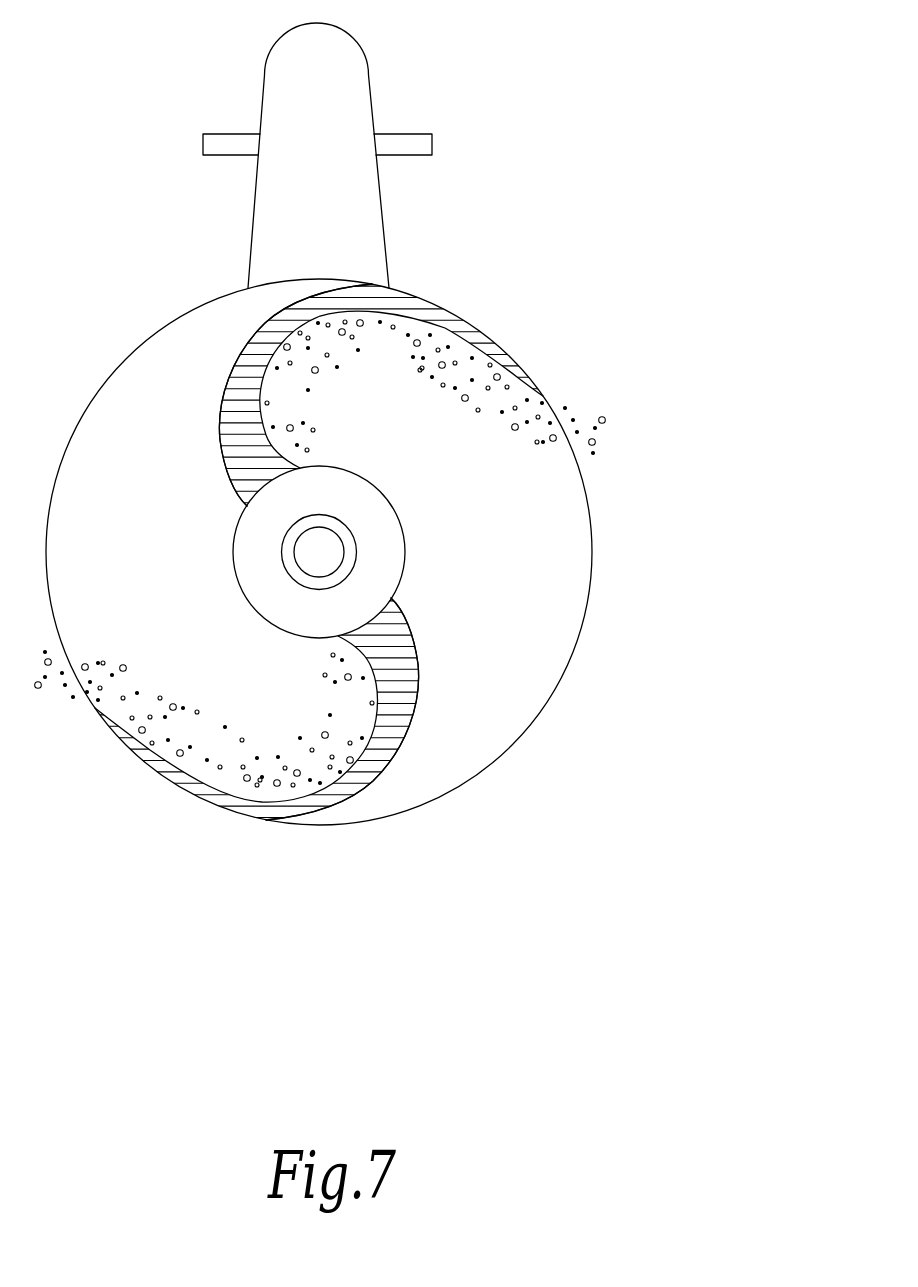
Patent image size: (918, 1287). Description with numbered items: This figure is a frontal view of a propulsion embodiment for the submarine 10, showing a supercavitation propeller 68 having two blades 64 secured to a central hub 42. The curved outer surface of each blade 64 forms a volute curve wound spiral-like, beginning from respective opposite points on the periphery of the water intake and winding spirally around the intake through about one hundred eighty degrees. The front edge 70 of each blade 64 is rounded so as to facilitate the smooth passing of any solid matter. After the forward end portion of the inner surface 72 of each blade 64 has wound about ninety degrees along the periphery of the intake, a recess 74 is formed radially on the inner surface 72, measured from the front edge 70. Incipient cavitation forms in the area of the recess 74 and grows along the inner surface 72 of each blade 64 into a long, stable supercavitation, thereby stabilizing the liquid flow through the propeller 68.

The submarine 10 is at (682, 160).
The hub 42 is at (250, 600).
The blades 64 is at (230, 434).
The supercavitation propeller 68 is at (407, 513).
The front edge 70 is at (237, 358).
The inner surface 72 is at (303, 323).
The recess 74 is at (305, 408).